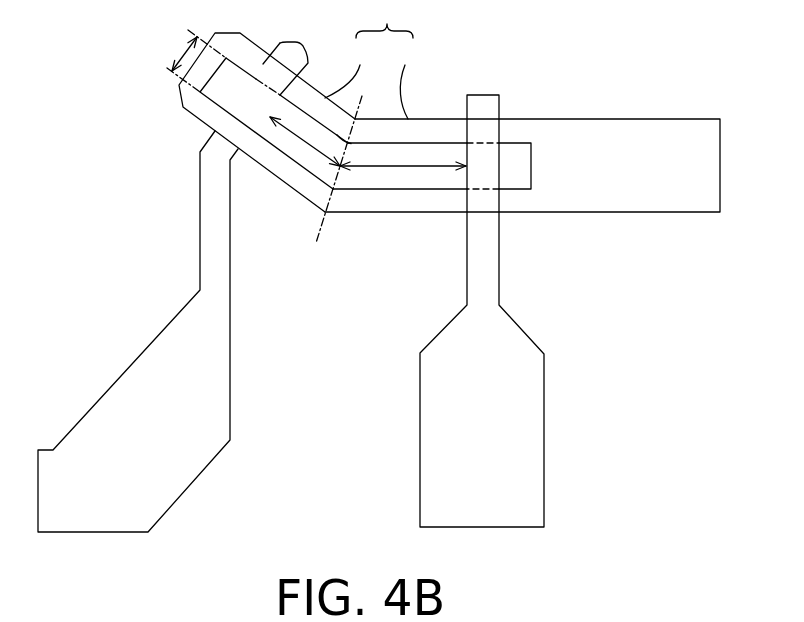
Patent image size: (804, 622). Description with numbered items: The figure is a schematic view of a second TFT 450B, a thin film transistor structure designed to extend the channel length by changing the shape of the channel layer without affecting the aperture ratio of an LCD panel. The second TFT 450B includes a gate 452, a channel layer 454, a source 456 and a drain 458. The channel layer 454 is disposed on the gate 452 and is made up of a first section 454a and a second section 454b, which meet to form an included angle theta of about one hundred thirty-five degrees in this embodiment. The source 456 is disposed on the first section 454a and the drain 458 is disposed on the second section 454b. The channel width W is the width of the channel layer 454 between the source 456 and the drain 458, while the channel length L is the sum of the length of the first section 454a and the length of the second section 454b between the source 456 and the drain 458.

The second TFT 450B is at (691, 546).
The gate 452 is at (593, 128).
The channel layer 454 is at (349, 167).
The first section 454a is at (393, 180).
The second section 454b is at (257, 147).
The source 456 is at (483, 242).
The drain 458 is at (210, 242).